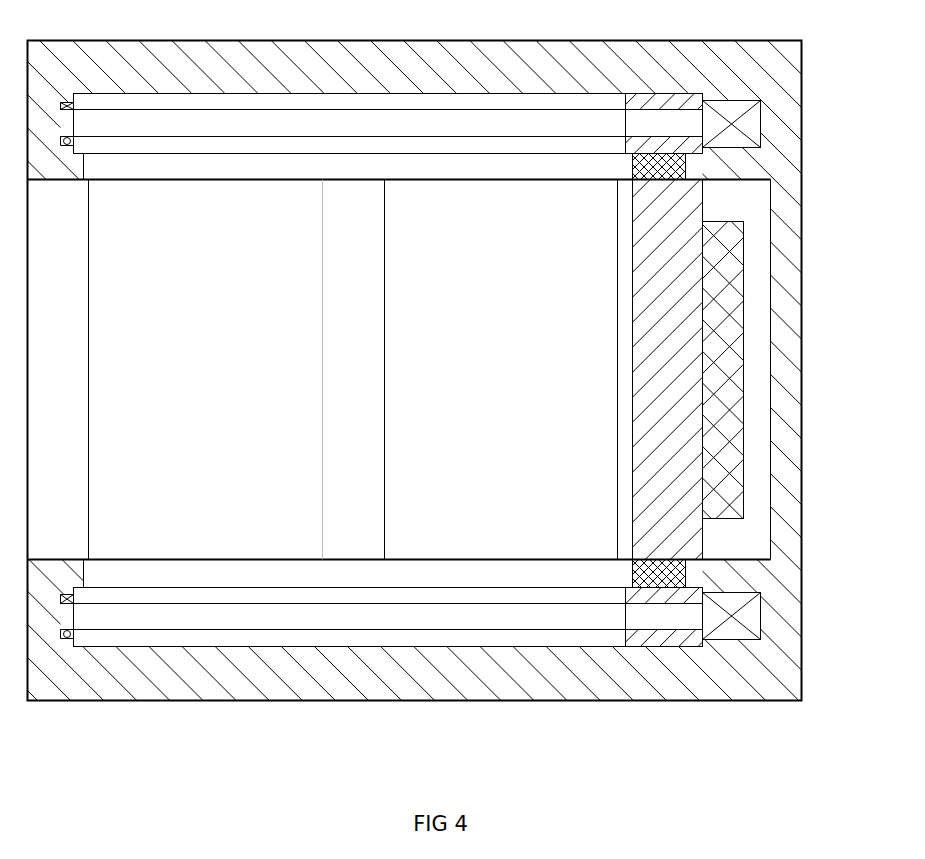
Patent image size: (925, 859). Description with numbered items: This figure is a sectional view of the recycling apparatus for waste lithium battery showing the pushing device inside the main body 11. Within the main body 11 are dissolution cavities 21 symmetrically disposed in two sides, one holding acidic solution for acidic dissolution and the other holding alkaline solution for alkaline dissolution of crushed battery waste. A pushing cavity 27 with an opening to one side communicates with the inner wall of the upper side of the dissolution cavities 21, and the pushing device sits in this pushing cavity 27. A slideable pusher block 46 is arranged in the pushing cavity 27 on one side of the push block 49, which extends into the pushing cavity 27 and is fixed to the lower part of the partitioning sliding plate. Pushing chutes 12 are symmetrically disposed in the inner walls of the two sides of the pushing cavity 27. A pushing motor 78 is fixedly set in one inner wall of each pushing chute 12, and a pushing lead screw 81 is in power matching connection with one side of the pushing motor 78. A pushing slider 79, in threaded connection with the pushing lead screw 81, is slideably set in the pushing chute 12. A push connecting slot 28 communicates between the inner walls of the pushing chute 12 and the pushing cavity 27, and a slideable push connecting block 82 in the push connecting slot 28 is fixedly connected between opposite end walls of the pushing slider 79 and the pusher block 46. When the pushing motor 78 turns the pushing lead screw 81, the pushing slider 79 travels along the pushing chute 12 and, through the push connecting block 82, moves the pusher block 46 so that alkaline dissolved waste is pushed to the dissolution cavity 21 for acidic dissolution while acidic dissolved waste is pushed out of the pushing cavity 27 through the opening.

The main body 11 is at (465, 672).
The pushing chute 12 is at (537, 105).
The dissolution cavity 21 is at (501, 452).
The pushing cavity 27 is at (742, 202).
The push connecting slot 28 is at (490, 165).
The pusher block 46 is at (670, 340).
The push block 49 is at (728, 270).
The pushing motor 78 is at (745, 123).
The pushing slider 79 is at (684, 100).
The pushing lead screw 81 is at (666, 120).
The push connecting block 82 is at (652, 165).